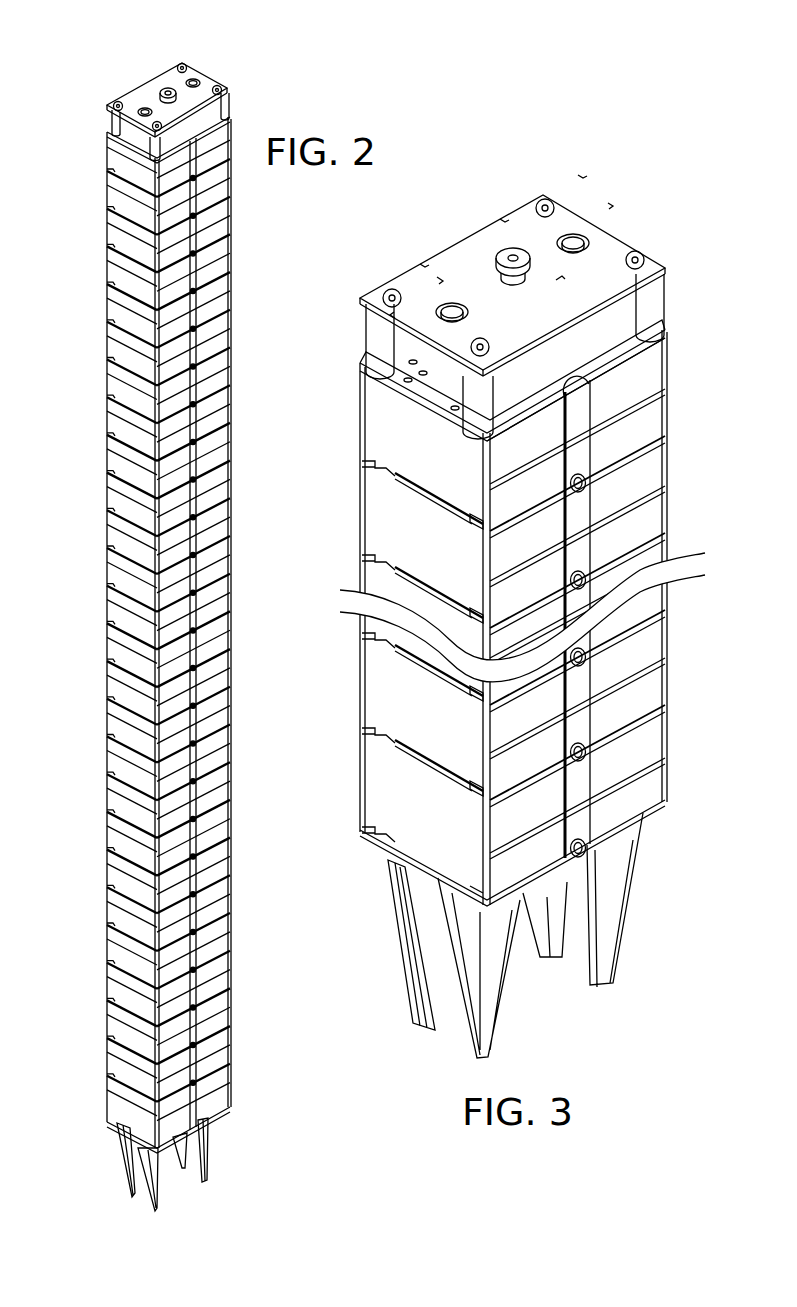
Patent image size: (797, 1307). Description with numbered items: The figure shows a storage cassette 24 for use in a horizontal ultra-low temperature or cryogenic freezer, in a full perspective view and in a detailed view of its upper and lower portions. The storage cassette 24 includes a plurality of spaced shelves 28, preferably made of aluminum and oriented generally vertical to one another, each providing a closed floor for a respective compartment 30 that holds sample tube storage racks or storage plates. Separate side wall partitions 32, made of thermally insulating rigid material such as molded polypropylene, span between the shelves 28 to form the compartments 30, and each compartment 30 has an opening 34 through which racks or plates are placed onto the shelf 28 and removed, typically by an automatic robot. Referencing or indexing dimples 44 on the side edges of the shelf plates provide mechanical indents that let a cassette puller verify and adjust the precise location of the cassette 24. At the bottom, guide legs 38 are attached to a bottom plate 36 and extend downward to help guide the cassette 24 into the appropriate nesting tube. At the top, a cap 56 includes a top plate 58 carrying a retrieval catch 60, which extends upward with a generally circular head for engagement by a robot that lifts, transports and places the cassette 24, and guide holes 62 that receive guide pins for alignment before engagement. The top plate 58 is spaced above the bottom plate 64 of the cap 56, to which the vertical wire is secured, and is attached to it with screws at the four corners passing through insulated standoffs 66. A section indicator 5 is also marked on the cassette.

In FIG. 2, the storage cassette 24 is at (112, 76).
In FIG. 3, the storage cassette 24 is at (590, 156).
In FIG. 2, the spaced shelves 28 is at (132, 170).
In FIG. 3, the spaced shelves 28 is at (417, 450).
In FIG. 2, the compartments 30 is at (127, 151).
In FIG. 3, the compartments 30 is at (399, 431).
In FIG. 2, the side wall partitions 32 is at (215, 138).
In FIG. 3, the side wall partitions 32 is at (640, 412).
In FIG. 3, the opening 34 is at (405, 413).
In FIG. 3, the bottom plate 36 is at (467, 897).
In FIG. 3, the guide legs 38 is at (468, 1015).
In FIG. 3, the referencing or indexing dimples 44 is at (588, 483).
In FIG. 3, the cap 56 is at (603, 357).
In FIG. 3, the top plate 58 is at (460, 262).
In FIG. 3, the retrieval catch 60 is at (514, 247).
In FIG. 3, the guide holes 62 is at (589, 240).
In FIG. 3, the bottom plate 64 is at (570, 367).
In FIG. 3, the insulated standoffs 66 is at (650, 300).
In FIG. 3, the section line 5 is at (737, 317).